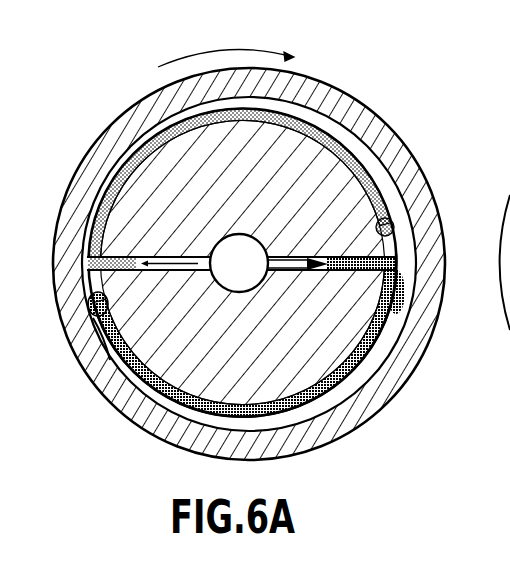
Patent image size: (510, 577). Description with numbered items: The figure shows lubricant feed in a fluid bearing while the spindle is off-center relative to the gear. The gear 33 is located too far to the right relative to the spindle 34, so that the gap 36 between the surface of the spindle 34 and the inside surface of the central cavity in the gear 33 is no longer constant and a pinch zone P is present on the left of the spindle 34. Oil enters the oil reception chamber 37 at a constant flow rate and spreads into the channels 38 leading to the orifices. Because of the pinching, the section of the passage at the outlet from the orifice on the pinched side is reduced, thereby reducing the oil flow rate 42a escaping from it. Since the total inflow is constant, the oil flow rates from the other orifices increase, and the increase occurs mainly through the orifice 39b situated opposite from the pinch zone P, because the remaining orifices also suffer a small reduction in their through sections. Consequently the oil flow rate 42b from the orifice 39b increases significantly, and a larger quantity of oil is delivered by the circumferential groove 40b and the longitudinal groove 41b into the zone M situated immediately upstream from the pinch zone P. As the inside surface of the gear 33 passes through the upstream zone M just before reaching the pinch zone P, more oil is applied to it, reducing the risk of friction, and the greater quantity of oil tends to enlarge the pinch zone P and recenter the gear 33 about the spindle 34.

The gear 33 is at (112, 140).
The gap 36 is at (337, 137).
The spindle 34 is at (290, 364).
The oil reception chamber 37 is at (252, 276).
The channels 38 is at (285, 257).
The oil flow rate 42a is at (183, 257).
The oil flow rate 42b is at (303, 271).
The orifice 39b is at (398, 263).
The longitudinal groove 41b is at (98, 302).
The circumferential groove 40b is at (362, 363).
The pinch zone P is at (84, 253).
The upstream zone M is at (96, 332).